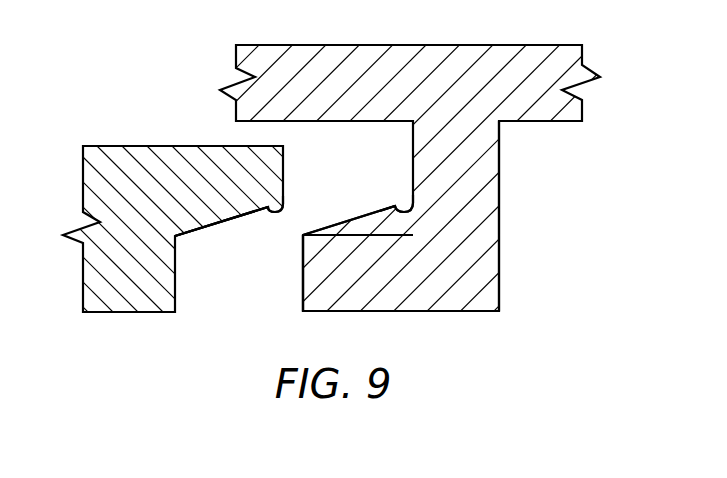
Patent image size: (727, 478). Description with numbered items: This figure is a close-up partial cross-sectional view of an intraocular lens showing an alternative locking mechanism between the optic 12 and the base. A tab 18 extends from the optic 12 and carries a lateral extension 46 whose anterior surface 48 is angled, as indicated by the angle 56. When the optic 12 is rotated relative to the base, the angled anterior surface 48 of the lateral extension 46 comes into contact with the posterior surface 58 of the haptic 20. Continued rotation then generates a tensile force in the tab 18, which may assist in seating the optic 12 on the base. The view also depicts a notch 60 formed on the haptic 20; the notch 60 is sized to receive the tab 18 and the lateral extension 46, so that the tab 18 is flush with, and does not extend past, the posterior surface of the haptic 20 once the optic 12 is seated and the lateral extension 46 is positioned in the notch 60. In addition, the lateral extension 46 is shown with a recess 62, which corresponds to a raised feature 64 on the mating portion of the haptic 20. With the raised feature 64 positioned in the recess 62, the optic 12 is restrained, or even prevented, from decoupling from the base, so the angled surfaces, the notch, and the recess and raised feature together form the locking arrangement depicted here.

The optic 12 is at (510, 41).
The tab 18 is at (499, 188).
The haptic 20 is at (127, 312).
The lateral extension 46 is at (413, 311).
The anterior surface 48 is at (360, 216).
The angle 56 is at (403, 217).
The posterior surface 58 is at (208, 226).
The notch 60 is at (237, 278).
The recess 62 is at (401, 204).
The raised feature 64 is at (278, 209).